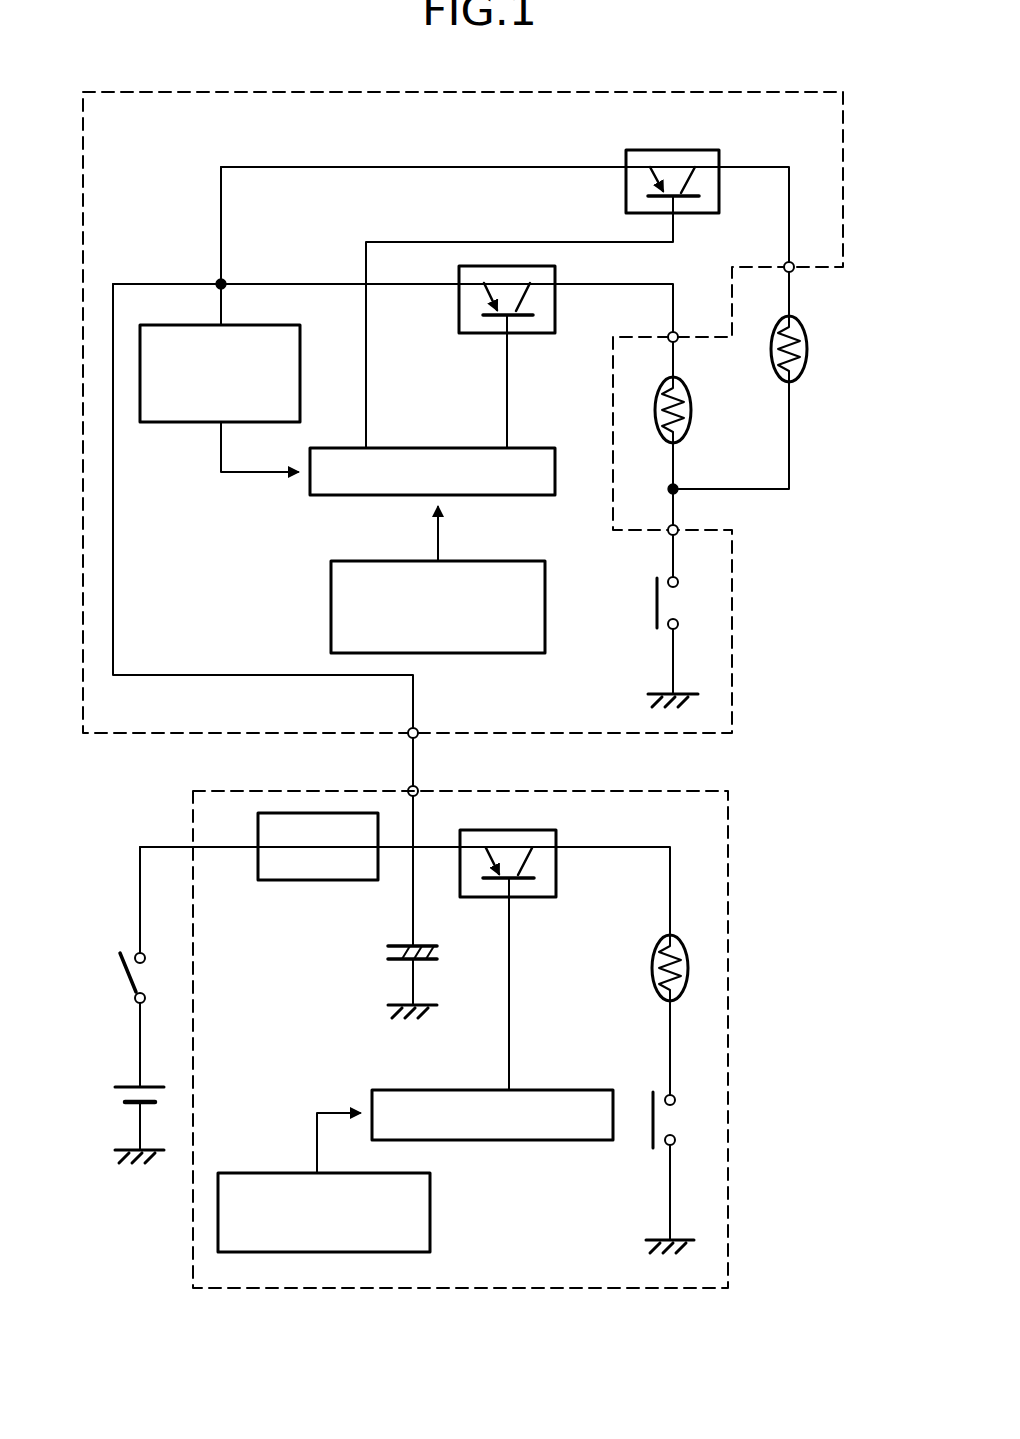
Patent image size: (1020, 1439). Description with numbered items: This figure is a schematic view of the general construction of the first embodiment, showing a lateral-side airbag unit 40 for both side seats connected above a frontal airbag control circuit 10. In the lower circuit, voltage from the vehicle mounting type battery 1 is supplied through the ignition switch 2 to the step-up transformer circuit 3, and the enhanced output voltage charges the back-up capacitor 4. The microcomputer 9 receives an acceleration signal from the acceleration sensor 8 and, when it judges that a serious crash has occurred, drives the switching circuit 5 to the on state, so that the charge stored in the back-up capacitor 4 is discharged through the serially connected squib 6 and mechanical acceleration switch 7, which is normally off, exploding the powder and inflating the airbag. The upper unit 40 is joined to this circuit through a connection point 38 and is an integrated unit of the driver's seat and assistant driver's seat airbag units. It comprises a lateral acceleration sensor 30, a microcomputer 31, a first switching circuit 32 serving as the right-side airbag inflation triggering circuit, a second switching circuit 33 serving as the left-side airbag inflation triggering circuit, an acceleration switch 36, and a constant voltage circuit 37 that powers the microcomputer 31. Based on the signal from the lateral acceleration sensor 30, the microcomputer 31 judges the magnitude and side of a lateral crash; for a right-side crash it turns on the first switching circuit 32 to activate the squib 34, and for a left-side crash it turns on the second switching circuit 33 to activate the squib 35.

The vehicle mounting type battery 1 is at (119, 1082).
The ignition switch 2 is at (119, 945).
The step-up transformer circuit 3 is at (284, 882).
The back-up capacitor 4 is at (384, 956).
The switching circuit 5 is at (557, 878).
The squib 6 is at (688, 940).
The mechanical acceleration switch 7 is at (678, 1095).
The acceleration sensor 8 is at (432, 1210).
The microcomputer 9 is at (560, 1090).
The air bag control unit 10 is at (729, 836).
The lateral acceleration sensor 30 is at (546, 581).
The microcomputer 31 is at (529, 448).
The first switching circuit 32 is at (459, 316).
The second switching circuit 33 is at (695, 150).
The squib 34 is at (691, 392).
The squib 35 is at (807, 327).
The acceleration switch 36 is at (650, 625).
The constant voltage circuit 37 is at (181, 424).
The connector 38 is at (415, 763).
The lateral-side airbag unit 40 is at (843, 135).